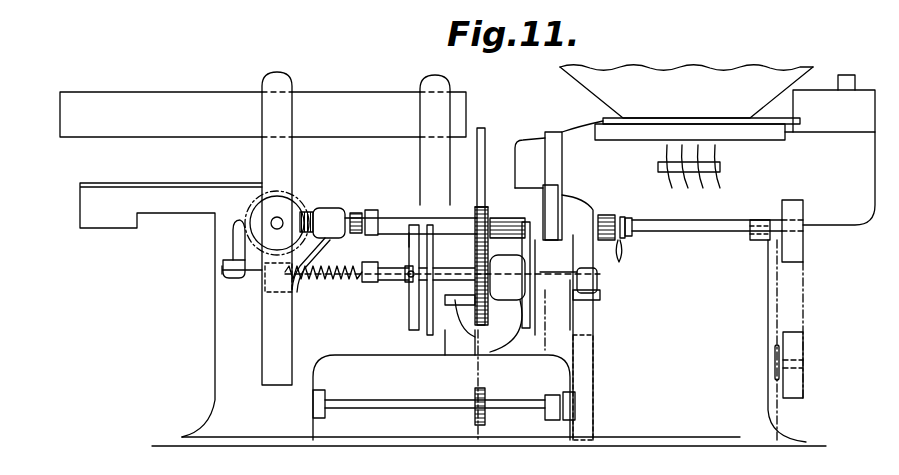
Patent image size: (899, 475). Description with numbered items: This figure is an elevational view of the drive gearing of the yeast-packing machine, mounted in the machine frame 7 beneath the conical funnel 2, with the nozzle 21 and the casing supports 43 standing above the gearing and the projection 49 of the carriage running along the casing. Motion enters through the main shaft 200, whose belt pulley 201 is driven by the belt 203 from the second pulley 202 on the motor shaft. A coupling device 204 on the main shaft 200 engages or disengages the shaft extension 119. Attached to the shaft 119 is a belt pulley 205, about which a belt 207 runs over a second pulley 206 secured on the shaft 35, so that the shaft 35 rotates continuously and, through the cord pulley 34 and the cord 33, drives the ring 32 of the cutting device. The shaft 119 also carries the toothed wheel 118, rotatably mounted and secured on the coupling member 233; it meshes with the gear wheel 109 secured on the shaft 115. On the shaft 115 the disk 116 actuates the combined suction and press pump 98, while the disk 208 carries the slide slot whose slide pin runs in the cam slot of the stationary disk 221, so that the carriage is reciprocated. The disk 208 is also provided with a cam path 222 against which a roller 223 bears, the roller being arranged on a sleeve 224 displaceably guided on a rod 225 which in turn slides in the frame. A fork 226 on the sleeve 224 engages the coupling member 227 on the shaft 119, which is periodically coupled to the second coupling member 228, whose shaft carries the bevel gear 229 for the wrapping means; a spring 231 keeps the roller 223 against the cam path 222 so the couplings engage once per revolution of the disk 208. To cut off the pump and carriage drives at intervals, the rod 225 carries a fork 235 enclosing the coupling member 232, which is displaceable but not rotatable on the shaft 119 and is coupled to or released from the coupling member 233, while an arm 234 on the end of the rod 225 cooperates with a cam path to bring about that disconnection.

The conical funnel 2 is at (596, 85).
The machine frame 7 is at (215, 352).
The nozzle 21 is at (529, 147).
The ring 32 is at (486, 139).
The cord 33 is at (476, 372).
The cord pulley 34 is at (474, 397).
The shaft 35 is at (358, 404).
The supports 43 is at (294, 82).
The projection 49 is at (200, 97).
The combined suction and press pump 98 is at (560, 406).
The gear wheel 109 is at (478, 314).
The shaft 115 is at (447, 283).
The disk 116 is at (531, 331).
The toothed wheel 118 is at (485, 212).
The shaft extension 119 is at (396, 227).
The main shaft 200 is at (712, 222).
The belt pulley 201 is at (804, 210).
The second pulley 202 is at (804, 348).
The belt 203 is at (805, 298).
The coupling device 204 is at (622, 247).
The belt pulley 205 is at (548, 250).
The second pulley 206 is at (552, 378).
The belt 207 is at (556, 326).
The disk 208 is at (415, 322).
The stationary disk 221 is at (430, 336).
The cam path 222 is at (418, 240).
The roller 223 is at (442, 287).
The sleeve 224 is at (378, 284).
The rod 225 is at (253, 276).
The fork 226 is at (412, 267).
The coupling member 227 is at (381, 208).
The second coupling member 228 is at (356, 212).
The bevel gear 229 is at (306, 212).
The spring 231 is at (330, 262).
The coupling member 232 is at (505, 218).
The coupling member 233 is at (500, 266).
The arm 234 is at (232, 240).
The fork 235 is at (598, 224).